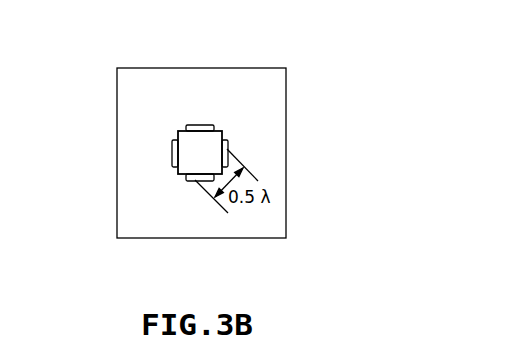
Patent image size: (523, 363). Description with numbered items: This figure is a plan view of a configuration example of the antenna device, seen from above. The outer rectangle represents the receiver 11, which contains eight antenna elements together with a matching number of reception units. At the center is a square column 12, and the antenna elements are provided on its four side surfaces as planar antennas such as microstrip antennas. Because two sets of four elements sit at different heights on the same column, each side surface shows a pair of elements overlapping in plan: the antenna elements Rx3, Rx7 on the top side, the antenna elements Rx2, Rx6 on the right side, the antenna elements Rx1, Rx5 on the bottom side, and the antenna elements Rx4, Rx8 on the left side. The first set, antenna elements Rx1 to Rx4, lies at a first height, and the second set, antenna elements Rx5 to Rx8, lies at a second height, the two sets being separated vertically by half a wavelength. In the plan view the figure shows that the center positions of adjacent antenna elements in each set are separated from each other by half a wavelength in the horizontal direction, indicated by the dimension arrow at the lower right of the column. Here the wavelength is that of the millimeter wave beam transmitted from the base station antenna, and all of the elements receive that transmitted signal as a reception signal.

The receiver 11 is at (286, 102).
The square column 12 is at (178, 133).
The antenna element Rx1 is at (188, 224).
The antenna element Rx5 is at (191, 181).
The antenna element Rx2 is at (304, 153).
The antenna element Rx6 is at (228, 149).
The antenna element Rx3 is at (203, 78).
The antenna element Rx7 is at (201, 125).
The antenna element Rx4 is at (94, 153).
The antenna element Rx8 is at (172, 153).